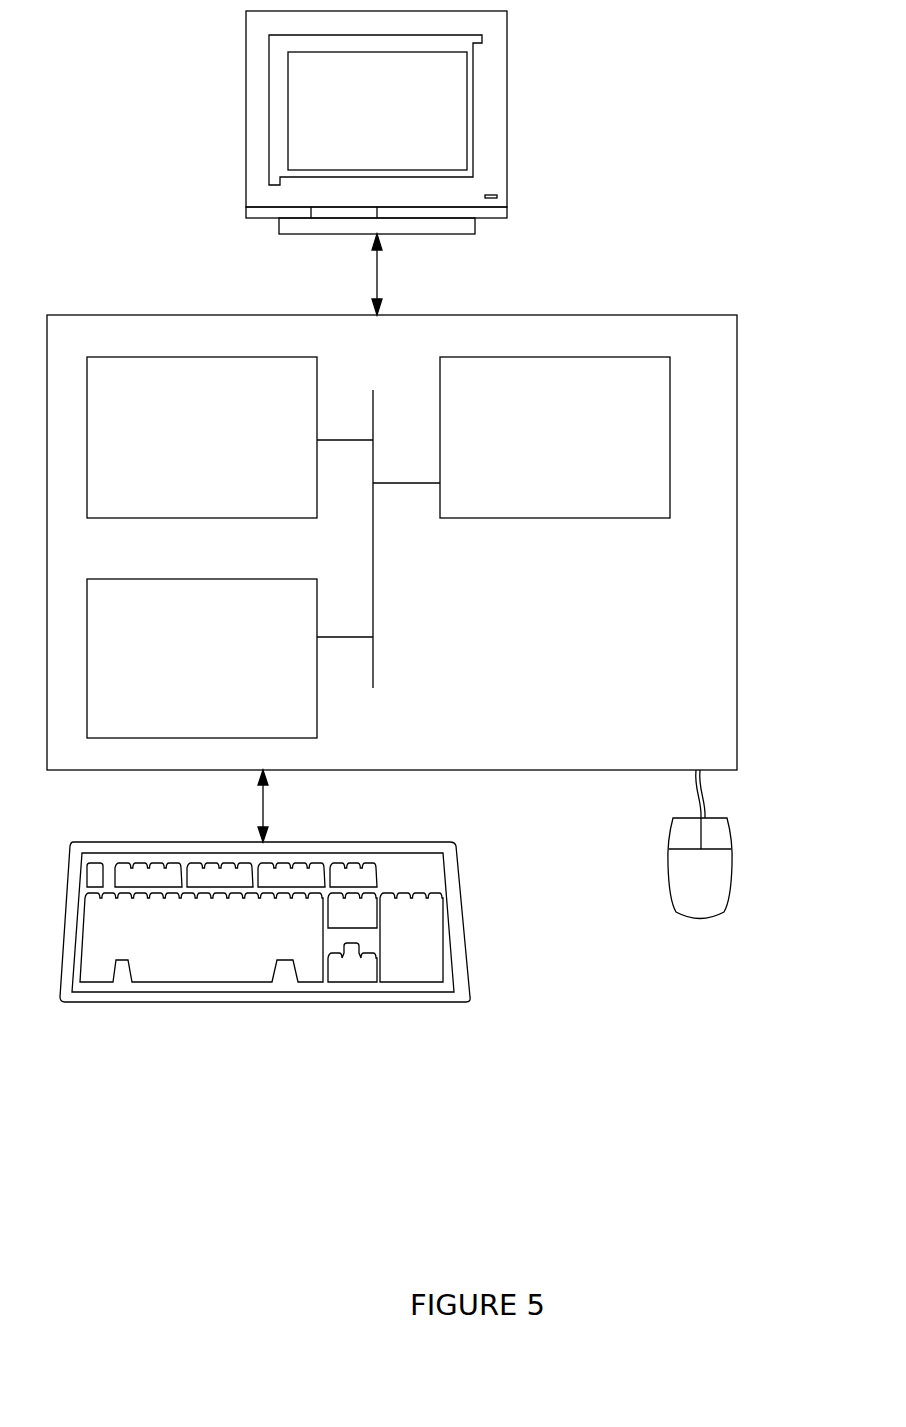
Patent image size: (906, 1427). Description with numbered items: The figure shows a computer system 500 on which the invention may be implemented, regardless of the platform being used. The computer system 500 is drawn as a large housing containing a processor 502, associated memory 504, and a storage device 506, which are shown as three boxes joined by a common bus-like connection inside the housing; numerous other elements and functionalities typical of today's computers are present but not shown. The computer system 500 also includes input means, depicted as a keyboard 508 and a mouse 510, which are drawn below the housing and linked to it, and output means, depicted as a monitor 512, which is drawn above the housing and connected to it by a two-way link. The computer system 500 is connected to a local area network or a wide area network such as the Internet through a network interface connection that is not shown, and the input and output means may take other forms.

The computer system 500 is at (716, 178).
The processor 502 is at (551, 447).
The memory 504 is at (180, 449).
The storage device 506 is at (176, 671).
The keyboard 508 is at (171, 961).
The mouse 510 is at (678, 891).
The monitor 512 is at (355, 126).